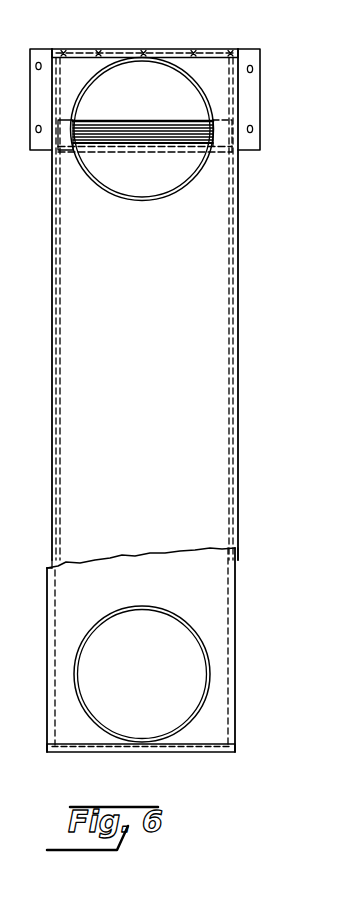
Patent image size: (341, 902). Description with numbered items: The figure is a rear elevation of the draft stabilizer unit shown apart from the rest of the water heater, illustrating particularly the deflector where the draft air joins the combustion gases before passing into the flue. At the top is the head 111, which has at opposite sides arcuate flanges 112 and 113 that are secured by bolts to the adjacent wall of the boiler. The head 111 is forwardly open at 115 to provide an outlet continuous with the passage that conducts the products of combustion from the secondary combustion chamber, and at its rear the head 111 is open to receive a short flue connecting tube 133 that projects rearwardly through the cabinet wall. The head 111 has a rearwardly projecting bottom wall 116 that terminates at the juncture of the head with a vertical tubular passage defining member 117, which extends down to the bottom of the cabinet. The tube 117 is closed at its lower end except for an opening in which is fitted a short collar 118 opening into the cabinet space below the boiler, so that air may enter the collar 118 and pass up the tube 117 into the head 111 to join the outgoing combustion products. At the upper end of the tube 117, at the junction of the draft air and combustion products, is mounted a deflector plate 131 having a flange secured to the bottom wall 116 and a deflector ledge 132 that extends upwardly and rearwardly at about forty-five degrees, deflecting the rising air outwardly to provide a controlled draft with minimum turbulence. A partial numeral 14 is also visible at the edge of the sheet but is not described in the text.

The head 111 is at (208, 52).
The arcuate flange 112 is at (42, 51).
The arcuate flange 113 is at (252, 51).
The forward opening 115 is at (108, 100).
The bottom wall 116 is at (192, 153).
The tubular passage defining member 117 is at (238, 332).
The collar 118 is at (160, 608).
The deflector plate 131 is at (145, 144).
The deflector ledge 132 is at (182, 100).
The flue connecting tube 133 is at (170, 200).
The numeral 14 is at (333, 442).